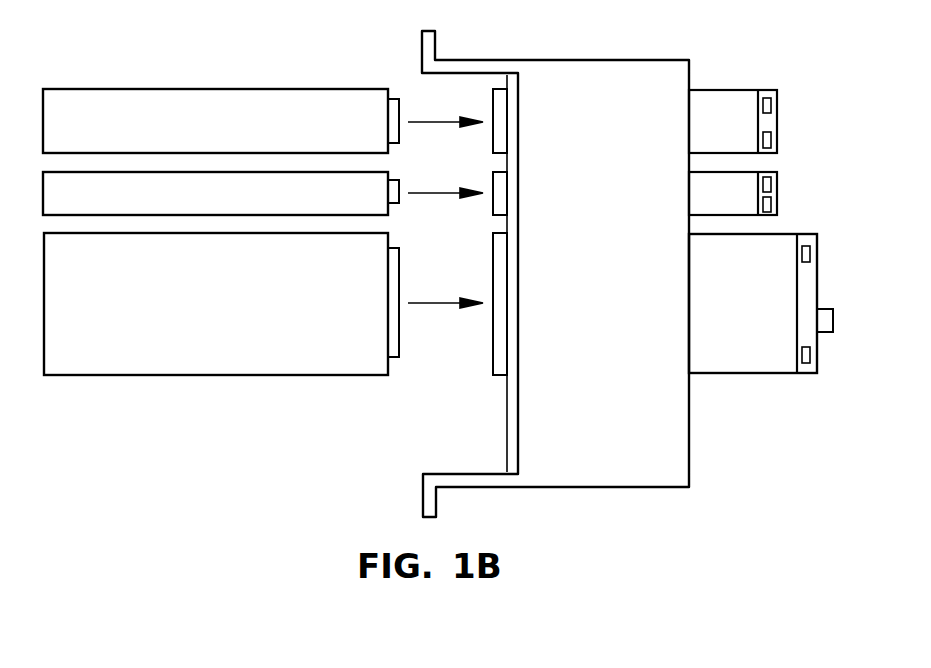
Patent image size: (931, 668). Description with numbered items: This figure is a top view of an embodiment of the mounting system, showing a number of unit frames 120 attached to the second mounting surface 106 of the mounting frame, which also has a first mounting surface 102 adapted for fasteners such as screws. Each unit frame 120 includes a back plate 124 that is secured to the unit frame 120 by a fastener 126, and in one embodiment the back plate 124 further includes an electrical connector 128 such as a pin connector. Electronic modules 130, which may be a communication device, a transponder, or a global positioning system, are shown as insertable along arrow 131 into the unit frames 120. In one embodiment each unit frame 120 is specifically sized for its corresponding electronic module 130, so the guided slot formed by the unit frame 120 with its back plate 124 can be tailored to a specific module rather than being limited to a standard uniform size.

The first mounting surface 102 is at (422, 493).
The second mounting surface 106 is at (512, 130).
The unit frame 120 is at (762, 314).
The back plate 124 is at (818, 282).
The fastener 126 is at (806, 363).
The electrical connector 128 is at (831, 322).
The electronic module 130 is at (234, 317).
The arrow 131 is at (446, 304).